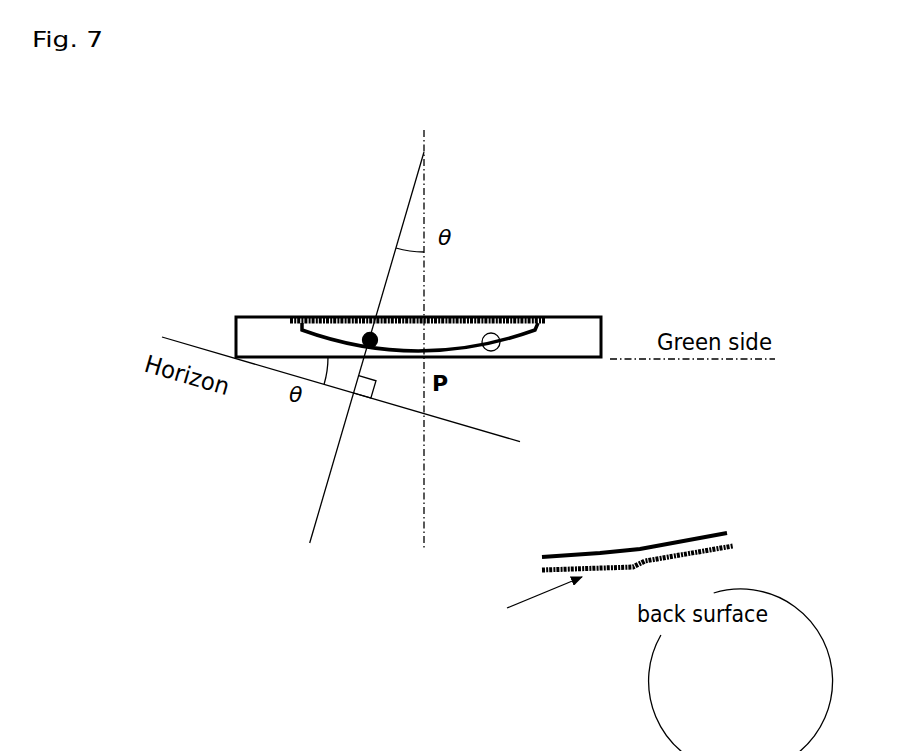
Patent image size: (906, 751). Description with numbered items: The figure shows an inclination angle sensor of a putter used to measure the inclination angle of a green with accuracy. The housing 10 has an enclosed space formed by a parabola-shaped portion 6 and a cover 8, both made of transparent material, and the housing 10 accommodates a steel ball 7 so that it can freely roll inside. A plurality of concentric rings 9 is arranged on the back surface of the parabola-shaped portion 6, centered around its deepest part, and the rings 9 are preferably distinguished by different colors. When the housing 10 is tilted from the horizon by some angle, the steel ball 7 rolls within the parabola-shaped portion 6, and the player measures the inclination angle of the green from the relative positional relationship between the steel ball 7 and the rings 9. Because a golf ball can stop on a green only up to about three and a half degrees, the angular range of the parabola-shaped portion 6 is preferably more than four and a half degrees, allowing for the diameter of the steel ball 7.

The parabola-shaped portion 6 is at (497, 351).
The steel ball 7 is at (360, 328).
The cover 8 is at (507, 318).
The concentric rings 9 is at (314, 393).
The housing 10 is at (575, 333).